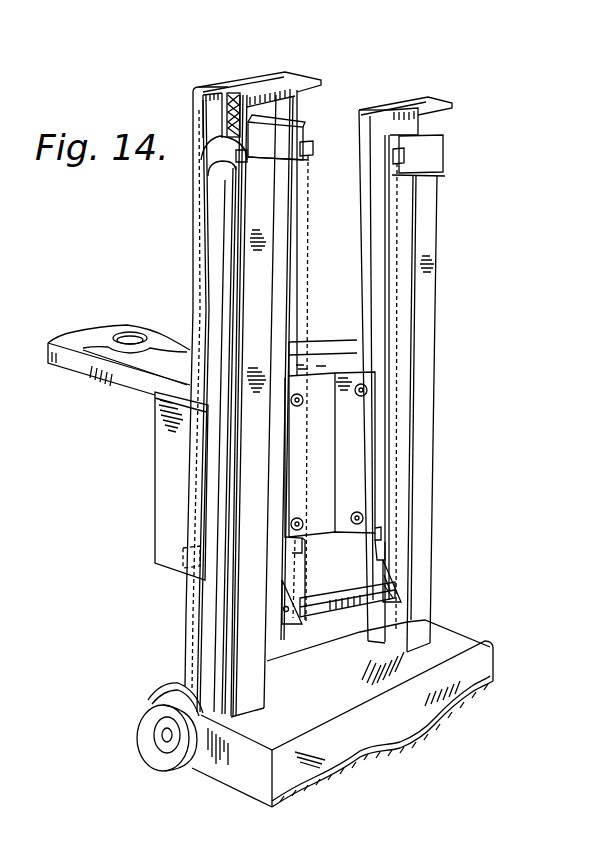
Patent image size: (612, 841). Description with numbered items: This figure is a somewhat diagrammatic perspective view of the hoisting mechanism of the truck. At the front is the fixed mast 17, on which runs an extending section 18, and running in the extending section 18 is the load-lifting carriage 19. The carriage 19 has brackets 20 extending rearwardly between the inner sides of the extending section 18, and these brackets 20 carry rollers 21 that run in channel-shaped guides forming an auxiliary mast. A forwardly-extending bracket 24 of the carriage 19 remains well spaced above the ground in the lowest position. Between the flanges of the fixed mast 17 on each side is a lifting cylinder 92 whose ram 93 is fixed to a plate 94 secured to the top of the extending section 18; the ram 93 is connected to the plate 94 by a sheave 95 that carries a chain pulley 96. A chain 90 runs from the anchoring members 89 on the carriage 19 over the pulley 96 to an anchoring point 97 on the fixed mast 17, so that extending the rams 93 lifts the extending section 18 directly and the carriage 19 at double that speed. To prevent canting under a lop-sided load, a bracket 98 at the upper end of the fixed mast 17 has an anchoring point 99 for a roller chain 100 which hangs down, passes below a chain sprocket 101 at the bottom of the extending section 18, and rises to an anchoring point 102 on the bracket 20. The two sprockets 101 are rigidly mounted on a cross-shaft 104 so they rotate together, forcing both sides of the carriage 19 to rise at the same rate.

The fixed mast 17 is at (250, 243).
The extending section 18 is at (283, 95).
The load-lifting carriage 19 is at (163, 460).
The brackets 20 is at (285, 553).
The rollers 21 is at (292, 401).
The forwardly-extending bracket 24 is at (125, 375).
The anchoring members 89 is at (183, 560).
The chain 90 is at (202, 286).
The lifting cylinder 92 is at (213, 258).
The ram 93 is at (217, 166).
The plate 94 is at (318, 83).
The sheave 95 is at (215, 100).
The chain pulley 96 is at (240, 95).
The anchoring point 97 is at (205, 156).
The bracket 98 is at (442, 162).
The anchoring point 99 is at (312, 142).
The roller chain 100 is at (311, 222).
The chain sprocket 101 is at (293, 622).
The anchoring point 102 is at (288, 568).
The cross-shaft 104 is at (396, 591).